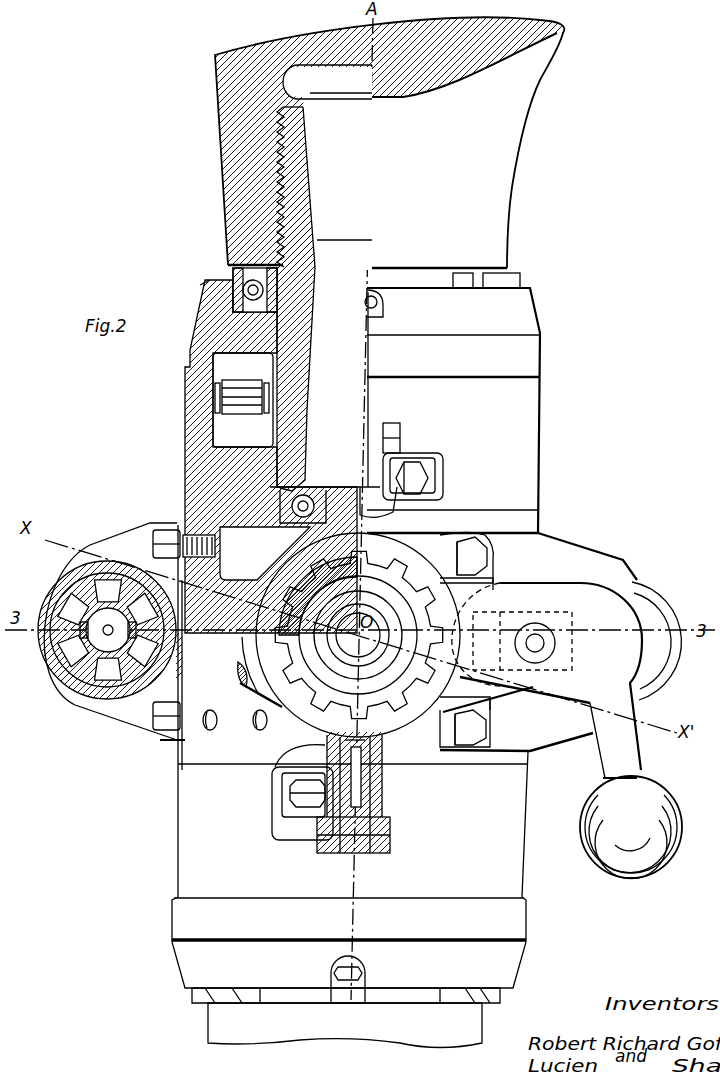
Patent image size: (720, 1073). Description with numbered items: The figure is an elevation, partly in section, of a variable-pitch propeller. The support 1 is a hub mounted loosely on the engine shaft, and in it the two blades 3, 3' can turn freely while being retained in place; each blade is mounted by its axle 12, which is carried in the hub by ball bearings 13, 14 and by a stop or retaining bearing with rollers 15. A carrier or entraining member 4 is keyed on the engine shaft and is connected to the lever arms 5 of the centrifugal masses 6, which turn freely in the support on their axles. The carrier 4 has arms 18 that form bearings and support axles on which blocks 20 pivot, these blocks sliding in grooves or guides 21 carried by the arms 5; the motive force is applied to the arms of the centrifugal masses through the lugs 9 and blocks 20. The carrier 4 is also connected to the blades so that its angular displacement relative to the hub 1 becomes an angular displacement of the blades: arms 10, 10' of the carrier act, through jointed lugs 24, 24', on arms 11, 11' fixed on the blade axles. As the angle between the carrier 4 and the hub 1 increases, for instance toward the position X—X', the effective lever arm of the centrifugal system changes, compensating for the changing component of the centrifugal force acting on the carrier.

The support 1 is at (513, 402).
The blade 3 is at (389, 143).
The blade 3' is at (359, 1025).
The carrier or entraining member 4 is at (255, 683).
The lever arm 5 is at (563, 687).
The centrifugal mass 6 is at (630, 807).
The lug 9 is at (547, 627).
The arm of the carrier 10 is at (380, 520).
The arm of the carrier 10' is at (288, 792).
The arm fixed on the blade axle 11 is at (372, 808).
The arm fixed on the blade axle 11' is at (424, 455).
The blade axle 12 is at (237, 335).
The ball bearing 13 is at (247, 283).
The ball bearing 14 is at (292, 505).
The stop or retaining bearing with rollers 15 is at (247, 393).
The arm of the carrier 18 is at (508, 672).
The block 20 is at (507, 618).
The groove or guide 21 is at (458, 735).
The jointed lug 24 is at (360, 853).
The jointed lug 24' is at (400, 429).